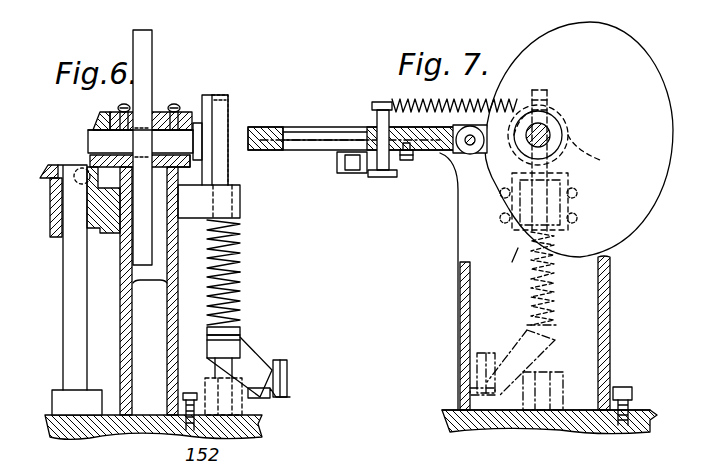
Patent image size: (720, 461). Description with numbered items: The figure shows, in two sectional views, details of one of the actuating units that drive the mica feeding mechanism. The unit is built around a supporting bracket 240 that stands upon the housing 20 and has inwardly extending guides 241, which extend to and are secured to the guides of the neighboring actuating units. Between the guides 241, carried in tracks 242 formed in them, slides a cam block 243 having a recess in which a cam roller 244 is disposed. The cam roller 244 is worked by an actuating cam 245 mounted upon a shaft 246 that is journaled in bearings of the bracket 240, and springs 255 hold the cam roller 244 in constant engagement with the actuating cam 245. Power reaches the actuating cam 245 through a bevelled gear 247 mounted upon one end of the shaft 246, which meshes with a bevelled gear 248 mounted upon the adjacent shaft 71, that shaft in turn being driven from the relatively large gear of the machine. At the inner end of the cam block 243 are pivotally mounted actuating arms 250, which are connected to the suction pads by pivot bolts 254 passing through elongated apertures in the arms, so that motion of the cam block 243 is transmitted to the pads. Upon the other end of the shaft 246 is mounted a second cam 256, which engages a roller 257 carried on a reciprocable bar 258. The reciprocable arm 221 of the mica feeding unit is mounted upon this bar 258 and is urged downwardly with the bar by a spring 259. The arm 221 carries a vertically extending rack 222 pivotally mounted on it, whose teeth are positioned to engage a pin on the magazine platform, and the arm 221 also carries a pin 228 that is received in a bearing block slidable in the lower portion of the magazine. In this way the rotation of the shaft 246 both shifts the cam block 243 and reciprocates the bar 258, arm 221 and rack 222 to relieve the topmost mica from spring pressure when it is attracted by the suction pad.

In FIG. 7, the housing 20 is at (645, 406).
In FIG. 6, the shaft 71 is at (72, 307).
In FIG. 7, the shaft 71 is at (518, 248).
In FIG. 6, the reciprocable arm 221 is at (248, 350).
In FIG. 7, the reciprocable arm 221 is at (520, 340).
In FIG. 6, the rack 222 is at (285, 360).
In FIG. 7, the rack 222 is at (475, 358).
In FIG. 6, the pin 228 is at (257, 396).
In FIG. 7, the pin 228 is at (465, 390).
In FIG. 6, the supporting bracket 240 is at (120, 328).
In FIG. 7, the supporting bracket 240 is at (605, 345).
In FIG. 7, the guides 241 is at (284, 129).
In FIG. 7, the tracks 242 is at (308, 138).
In FIG. 7, the cam block 243 is at (405, 162).
In FIG. 7, the cam roller 244 is at (467, 130).
In FIG. 7, the actuating cam 245 is at (547, 43).
In FIG. 6, the shaft 246 is at (105, 135).
In FIG. 7, the shaft 246 is at (530, 140).
In FIG. 6, the bevelled gear 247 is at (96, 119).
In FIG. 7, the bevelled gear 247 is at (555, 120).
In FIG. 6, the bevelled gear 248 is at (47, 172).
In FIG. 7, the bevelled gear 248 is at (580, 158).
In FIG. 7, the actuating arms 250 is at (362, 160).
In FIG. 7, the pivot bolts 254 is at (382, 178).
In FIG. 6, the springs 255 is at (180, 108).
In FIG. 7, the springs 255 is at (430, 100).
In FIG. 6, the cam 256 is at (207, 118).
In FIG. 7, the cam 256 is at (528, 90).
In FIG. 6, the roller 257 is at (206, 97).
In FIG. 7, the roller 257 is at (550, 100).
In FIG. 6, the reciprocable bar 258 is at (233, 260).
In FIG. 6, the spring 259 is at (232, 290).
In FIG. 7, the spring 259 is at (540, 302).